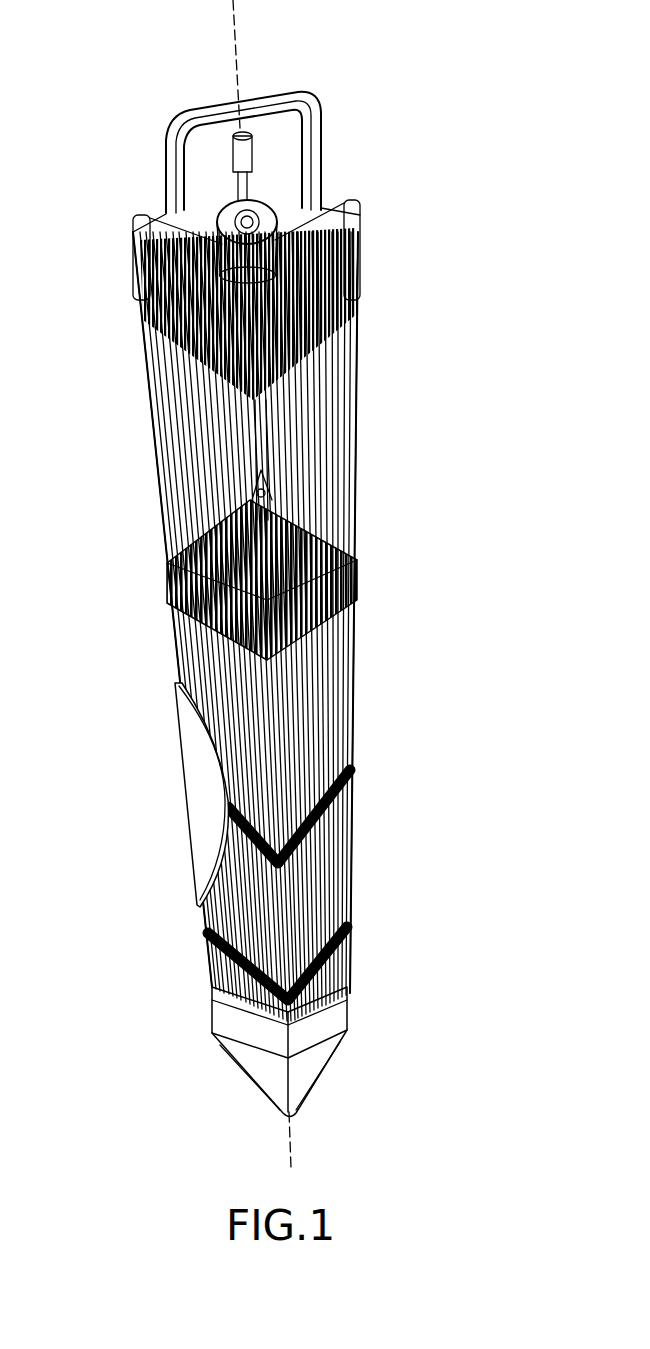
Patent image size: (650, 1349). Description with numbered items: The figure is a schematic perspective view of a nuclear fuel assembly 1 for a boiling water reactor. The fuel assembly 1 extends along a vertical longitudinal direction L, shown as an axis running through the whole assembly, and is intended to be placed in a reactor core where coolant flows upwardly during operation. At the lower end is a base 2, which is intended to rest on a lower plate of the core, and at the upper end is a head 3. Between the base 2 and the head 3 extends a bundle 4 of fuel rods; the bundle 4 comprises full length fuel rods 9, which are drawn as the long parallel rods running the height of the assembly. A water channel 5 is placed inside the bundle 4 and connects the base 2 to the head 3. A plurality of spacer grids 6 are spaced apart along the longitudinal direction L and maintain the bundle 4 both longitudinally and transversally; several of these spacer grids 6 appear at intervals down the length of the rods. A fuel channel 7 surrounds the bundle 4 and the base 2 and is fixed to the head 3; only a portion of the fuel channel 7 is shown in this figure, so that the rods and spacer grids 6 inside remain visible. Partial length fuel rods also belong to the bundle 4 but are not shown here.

The nuclear fuel assembly 1 is at (259, 584).
The base 2 is at (350, 1032).
The head 3 is at (355, 250).
The bundle of fuel rods 4 is at (160, 658).
The water channel 5 is at (252, 492).
The spacer grids 6 is at (357, 560).
The fuel channel 7 is at (202, 812).
The full length fuel rods 9 is at (342, 400).
The longitudinal direction L is at (236, 25).